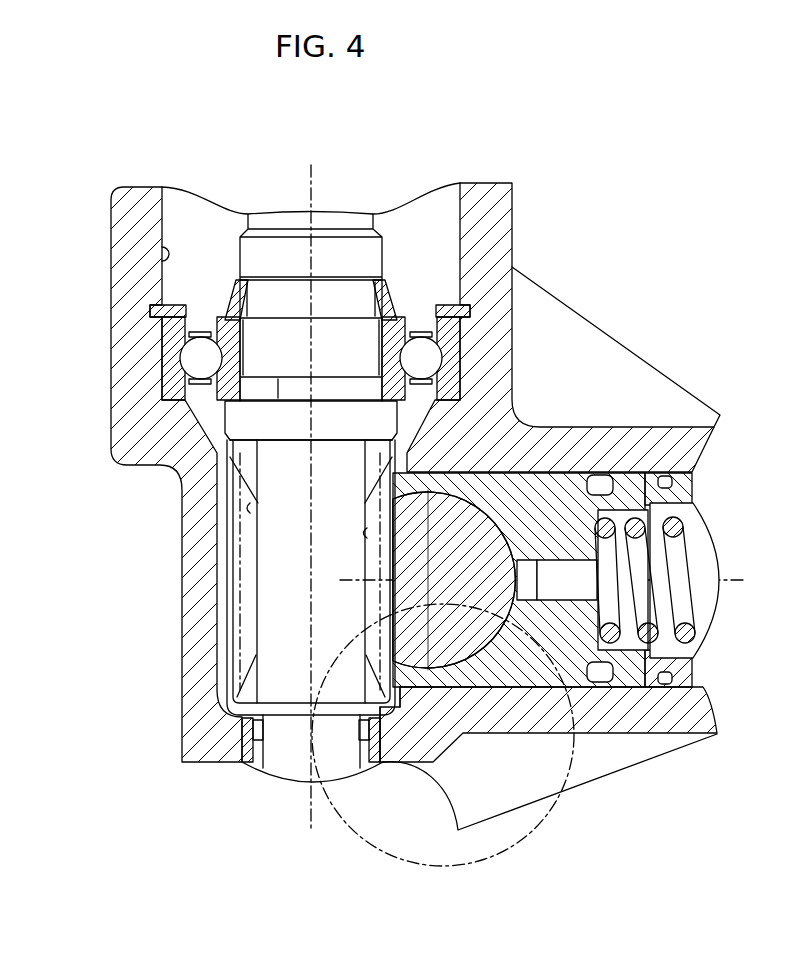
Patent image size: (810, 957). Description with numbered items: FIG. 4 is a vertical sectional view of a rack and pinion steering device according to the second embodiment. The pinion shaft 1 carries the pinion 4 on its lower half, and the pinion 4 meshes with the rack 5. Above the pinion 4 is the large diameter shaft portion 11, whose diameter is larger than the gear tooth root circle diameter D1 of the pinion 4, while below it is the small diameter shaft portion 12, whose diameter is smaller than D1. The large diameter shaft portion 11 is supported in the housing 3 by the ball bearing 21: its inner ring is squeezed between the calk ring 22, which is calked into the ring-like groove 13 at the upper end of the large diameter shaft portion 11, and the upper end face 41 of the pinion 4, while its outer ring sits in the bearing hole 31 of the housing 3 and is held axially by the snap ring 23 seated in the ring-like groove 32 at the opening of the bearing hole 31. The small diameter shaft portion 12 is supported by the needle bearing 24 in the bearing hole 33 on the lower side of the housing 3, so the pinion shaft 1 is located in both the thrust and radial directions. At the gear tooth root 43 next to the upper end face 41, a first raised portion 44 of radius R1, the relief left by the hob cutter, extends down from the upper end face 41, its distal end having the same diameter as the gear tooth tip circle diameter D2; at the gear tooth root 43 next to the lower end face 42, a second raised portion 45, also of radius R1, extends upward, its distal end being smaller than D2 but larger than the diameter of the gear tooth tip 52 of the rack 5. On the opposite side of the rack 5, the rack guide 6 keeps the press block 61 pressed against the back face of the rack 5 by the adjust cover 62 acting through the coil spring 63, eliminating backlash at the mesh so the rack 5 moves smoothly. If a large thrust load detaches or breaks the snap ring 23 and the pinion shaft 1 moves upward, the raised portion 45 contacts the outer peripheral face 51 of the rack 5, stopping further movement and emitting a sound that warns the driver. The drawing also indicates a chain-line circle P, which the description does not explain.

The pinion shaft 1 is at (335, 222).
The housing 3 is at (127, 225).
The bearing hole 31 is at (160, 254).
The ring-like groove 32 is at (152, 313).
The large diameter shaft portion 11 is at (255, 364).
The ring-like groove 13 is at (352, 305).
The upper end face 41 is at (282, 390).
The calk ring 22 is at (392, 298).
The snap ring 23 is at (470, 312).
The ball bearing 21 is at (433, 358).
The press block 61 is at (545, 488).
The adjust cover 62 is at (683, 677).
The coil spring 63 is at (670, 527).
The rack guide 6 is at (691, 527).
The raised portion 44 is at (246, 474).
The raised portion 45 is at (237, 692).
The gear tooth root 43 is at (250, 508).
The gear tooth tip 52 is at (367, 533).
The pinion 4 is at (267, 596).
The lower end face 42 is at (292, 688).
The outer peripheral face 51 is at (400, 678).
The rack 5 is at (478, 645).
The small diameter shaft portion 12 is at (275, 743).
The bearing hole 33 is at (242, 764).
The needle bearing 24 is at (370, 762).
The radius R1 is at (245, 493).
The gear tooth root circle diameter D1 is at (365, 563).
The gear tooth tip circle diameter D2 is at (390, 610).
The pitch circle P is at (493, 858).